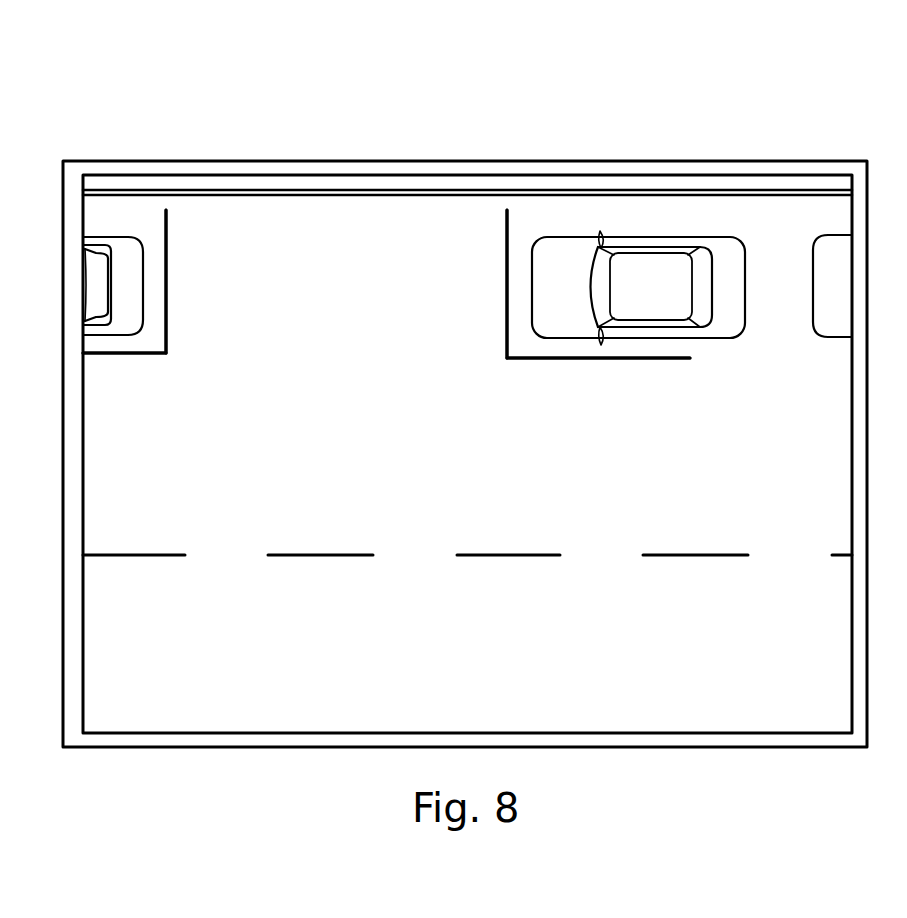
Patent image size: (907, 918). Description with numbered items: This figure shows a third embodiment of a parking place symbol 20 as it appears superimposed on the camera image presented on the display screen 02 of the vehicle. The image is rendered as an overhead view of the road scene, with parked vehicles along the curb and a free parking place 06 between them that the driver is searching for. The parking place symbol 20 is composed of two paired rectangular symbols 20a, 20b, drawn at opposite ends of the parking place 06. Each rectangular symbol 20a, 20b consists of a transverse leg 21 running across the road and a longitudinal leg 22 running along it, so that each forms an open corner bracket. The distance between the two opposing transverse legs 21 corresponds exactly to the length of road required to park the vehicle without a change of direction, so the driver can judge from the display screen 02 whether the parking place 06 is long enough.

The display screen 02 is at (692, 146).
The parking place 06 is at (358, 305).
The parking place symbol 20 is at (386, 352).
The rectangular symbol 20a is at (139, 354).
The rectangular symbol 20b is at (573, 359).
The transverse leg 21 is at (166, 267).
The longitudinal leg 22 is at (92, 354).